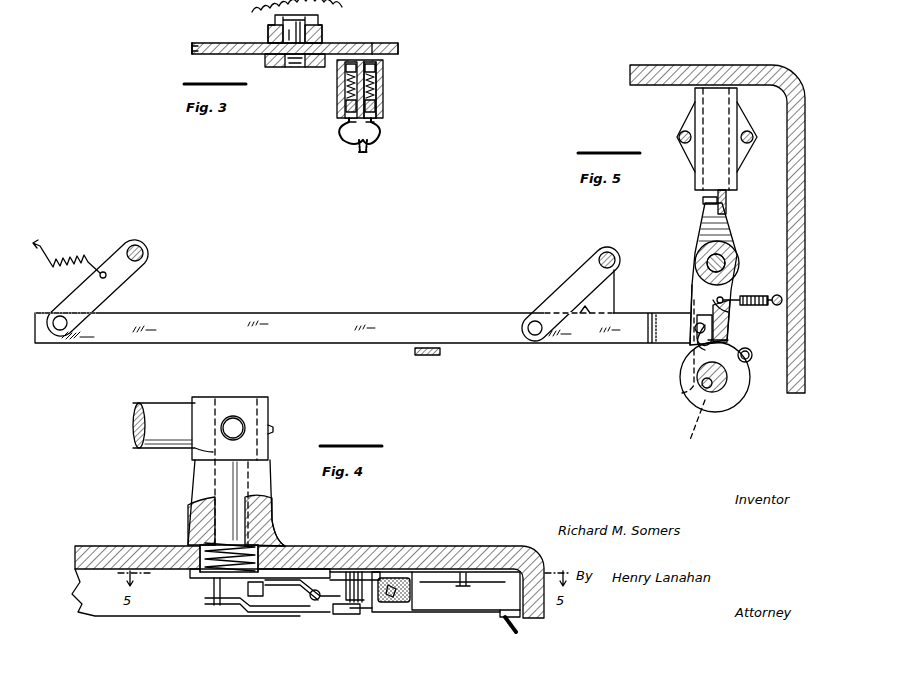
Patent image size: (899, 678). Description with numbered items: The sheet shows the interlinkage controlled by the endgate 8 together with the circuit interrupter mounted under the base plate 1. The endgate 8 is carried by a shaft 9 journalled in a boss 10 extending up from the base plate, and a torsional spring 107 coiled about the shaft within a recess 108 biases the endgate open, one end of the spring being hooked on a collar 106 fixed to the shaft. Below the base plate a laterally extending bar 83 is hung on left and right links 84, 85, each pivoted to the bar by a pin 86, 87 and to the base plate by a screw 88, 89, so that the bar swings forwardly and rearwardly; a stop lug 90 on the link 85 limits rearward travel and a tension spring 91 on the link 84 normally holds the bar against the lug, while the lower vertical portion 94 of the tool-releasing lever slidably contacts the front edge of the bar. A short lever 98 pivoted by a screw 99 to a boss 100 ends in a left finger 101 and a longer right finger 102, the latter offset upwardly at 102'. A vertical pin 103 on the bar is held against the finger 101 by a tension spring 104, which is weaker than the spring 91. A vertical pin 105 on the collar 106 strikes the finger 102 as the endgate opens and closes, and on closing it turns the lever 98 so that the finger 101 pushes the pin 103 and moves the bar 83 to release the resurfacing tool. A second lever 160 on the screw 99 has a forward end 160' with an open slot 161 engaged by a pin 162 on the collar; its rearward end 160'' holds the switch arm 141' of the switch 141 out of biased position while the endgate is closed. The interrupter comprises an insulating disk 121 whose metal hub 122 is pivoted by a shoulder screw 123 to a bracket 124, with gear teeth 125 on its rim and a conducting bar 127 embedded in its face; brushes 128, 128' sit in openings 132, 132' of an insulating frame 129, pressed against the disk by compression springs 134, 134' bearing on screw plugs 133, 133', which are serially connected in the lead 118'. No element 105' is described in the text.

In FIG. 5, the base plate 1 is at (766, 72).
In FIG. 4, the base plate 1 is at (488, 546).
In FIG. 4, the endgate 8 is at (173, 427).
In FIG. 5, the shaft 9 is at (725, 392).
In FIG. 4, the shaft 9 is at (228, 510).
In FIG. 4, the boss 10 is at (273, 506).
In FIG. 5, the bar 83 is at (320, 312).
In FIG. 5, the left link 84 is at (122, 278).
In FIG. 5, the right link 85 is at (572, 278).
In FIG. 4, the right link 85 is at (312, 566).
In FIG. 5, the pin 86 is at (60, 331).
In FIG. 5, the pin 87 is at (535, 336).
In FIG. 5, the screw 88 is at (141, 248).
In FIG. 5, the screw 89 is at (614, 254).
In FIG. 5, the stop lug 90 is at (600, 306).
In FIG. 5, the tension spring 91 is at (70, 252).
In FIG. 5, the lower vertical portion 94 is at (430, 357).
In FIG. 5, the short lever 98 is at (704, 290).
In FIG. 4, the short lever 98 is at (352, 570).
In FIG. 5, the screw 99 is at (733, 258).
In FIG. 4, the screw 99 is at (362, 614).
In FIG. 5, the boss 100 is at (702, 250).
In FIG. 4, the boss 100 is at (388, 604).
In FIG. 5, the left finger 101 is at (696, 326).
In FIG. 4, the left finger 101 is at (318, 601).
In FIG. 5, the right finger 102 is at (743, 321).
In FIG. 4, the right finger 102 is at (302, 565).
In FIG. 5, the offset 102' is at (743, 309).
In FIG. 5, the vertical pin 103 is at (705, 330).
In FIG. 5, the tension spring 104 is at (758, 296).
In FIG. 5, the vertical pin 105 is at (758, 366).
In FIG. 4, the bracket 105' is at (267, 614).
In FIG. 5, the collar 106 is at (722, 410).
In FIG. 4, the collar 106 is at (196, 577).
In FIG. 4, the torsional spring 107 is at (266, 548).
In FIG. 4, the recess 108 is at (195, 548).
In FIG. 3, the lead 118' is at (387, 145).
In FIG. 3, the disk 121 is at (232, 44).
In FIG. 3, the metal hub 122 is at (318, 33).
In FIG. 3, the shoulder screw 123 is at (286, 38).
In FIG. 3, the bracket 124 is at (264, 62).
In FIG. 3, the gear teeth 125 is at (192, 50).
In FIG. 3, the bar 127 is at (364, 50).
In FIG. 3, the brush 128 is at (339, 89).
In FIG. 3, the brush 128' is at (402, 88).
In FIG. 3, the frame 129 is at (384, 78).
In FIG. 3, the opening 132 is at (326, 95).
In FIG. 3, the opening 132' is at (400, 88).
In FIG. 3, the screw plug 133 is at (330, 142).
In FIG. 3, the screw plug 133' is at (356, 148).
In FIG. 3, the compression spring 134 is at (326, 91).
In FIG. 3, the compression spring 134' is at (401, 91).
In FIG. 5, the switch 141 is at (728, 139).
In FIG. 4, the switch 141 is at (466, 603).
In FIG. 5, the switch arm 141' is at (745, 202).
In FIG. 4, the switch arm 141' is at (409, 554).
In FIG. 5, the lever 160 is at (742, 341).
In FIG. 4, the lever 160 is at (276, 606).
In FIG. 5, the forward end 160' is at (672, 383).
In FIG. 5, the rearward end portion 160'' is at (692, 205).
In FIG. 5, the open slot 161 is at (702, 415).
In FIG. 5, the vertical pin 162 is at (722, 380).
In FIG. 4, the vertical pin 162 is at (214, 592).